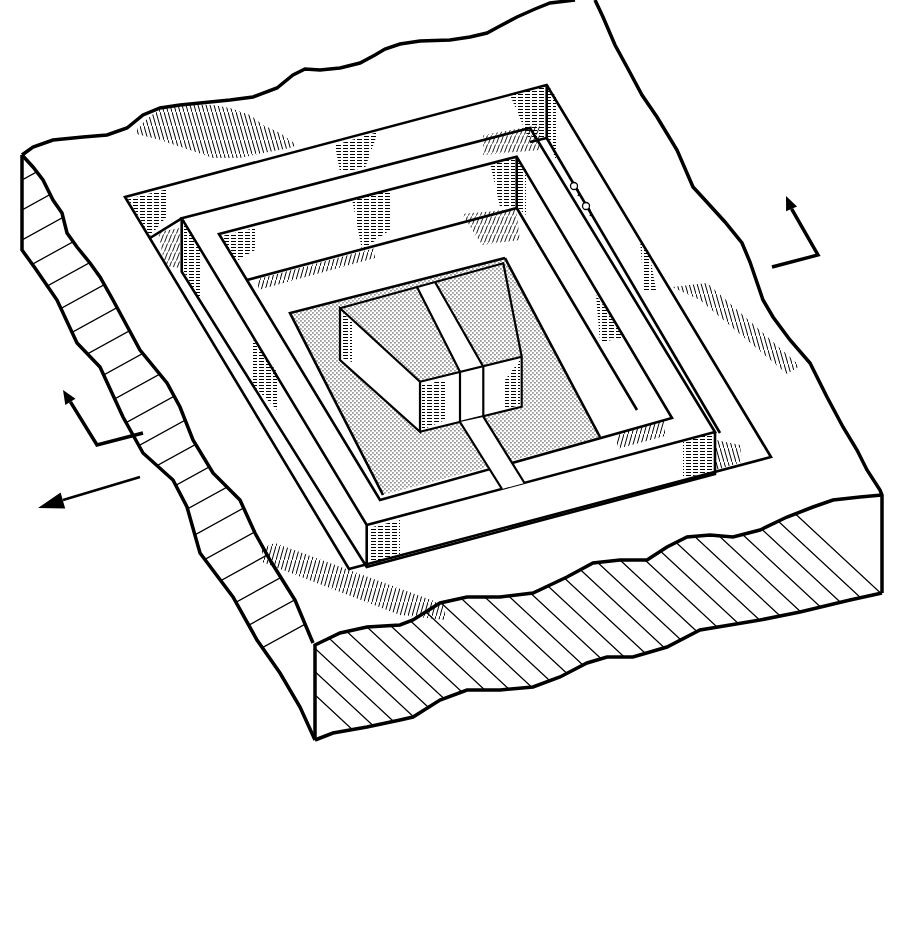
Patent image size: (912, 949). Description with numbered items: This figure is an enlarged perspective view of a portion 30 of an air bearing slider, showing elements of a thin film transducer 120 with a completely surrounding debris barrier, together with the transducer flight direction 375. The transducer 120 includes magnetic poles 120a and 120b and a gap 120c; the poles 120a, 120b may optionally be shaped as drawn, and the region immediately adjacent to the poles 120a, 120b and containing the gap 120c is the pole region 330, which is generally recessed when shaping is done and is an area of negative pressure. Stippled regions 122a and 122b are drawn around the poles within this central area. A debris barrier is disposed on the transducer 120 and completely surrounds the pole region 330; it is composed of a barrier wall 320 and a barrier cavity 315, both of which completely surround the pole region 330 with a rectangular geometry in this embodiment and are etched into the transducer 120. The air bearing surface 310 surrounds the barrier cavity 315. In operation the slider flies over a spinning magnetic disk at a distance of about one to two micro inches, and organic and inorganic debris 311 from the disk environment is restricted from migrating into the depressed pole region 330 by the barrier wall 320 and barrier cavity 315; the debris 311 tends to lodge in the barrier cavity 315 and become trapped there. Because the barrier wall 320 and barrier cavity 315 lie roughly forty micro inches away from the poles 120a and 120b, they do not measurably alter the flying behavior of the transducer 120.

The portion 30 is at (734, 53).
The thin film transducer 120 is at (108, 158).
The magnetic pole 120a is at (372, 318).
The magnetic pole 120b is at (490, 290).
The gap 120c is at (430, 292).
The first bonding pad 122a is at (396, 452).
The second bonding pad 122b is at (565, 430).
The air bearing surface 310 is at (587, 44).
The debris 311 is at (587, 202).
The barrier cavity 315 is at (606, 193).
The barrier wall 320 is at (617, 297).
The pole region 330 is at (430, 237).
The transducer flight direction 375 is at (93, 492).